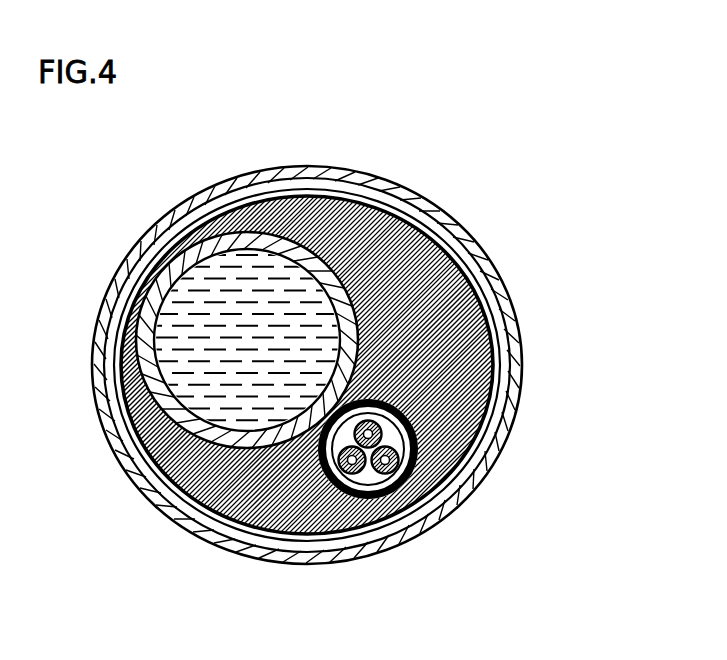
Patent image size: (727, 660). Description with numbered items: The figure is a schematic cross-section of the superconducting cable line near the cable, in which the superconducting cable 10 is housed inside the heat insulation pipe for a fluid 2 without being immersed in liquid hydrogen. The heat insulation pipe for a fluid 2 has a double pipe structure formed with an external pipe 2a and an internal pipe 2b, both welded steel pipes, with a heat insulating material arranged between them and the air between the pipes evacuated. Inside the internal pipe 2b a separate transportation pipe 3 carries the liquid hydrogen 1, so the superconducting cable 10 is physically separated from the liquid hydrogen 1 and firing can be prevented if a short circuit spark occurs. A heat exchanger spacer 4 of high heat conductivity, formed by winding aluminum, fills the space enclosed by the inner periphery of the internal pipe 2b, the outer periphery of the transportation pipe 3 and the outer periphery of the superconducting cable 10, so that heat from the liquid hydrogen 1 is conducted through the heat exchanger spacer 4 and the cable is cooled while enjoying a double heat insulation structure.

The liquid hydrogen 1 is at (200, 292).
The heat insulation pipe for a fluid 2 is at (345, 361).
The external pipe 2a is at (483, 263).
The internal pipe 2b is at (414, 204).
The transportation pipe 3 is at (222, 244).
The heat exchanger spacer 4 is at (338, 365).
The superconducting cable 10 is at (414, 466).